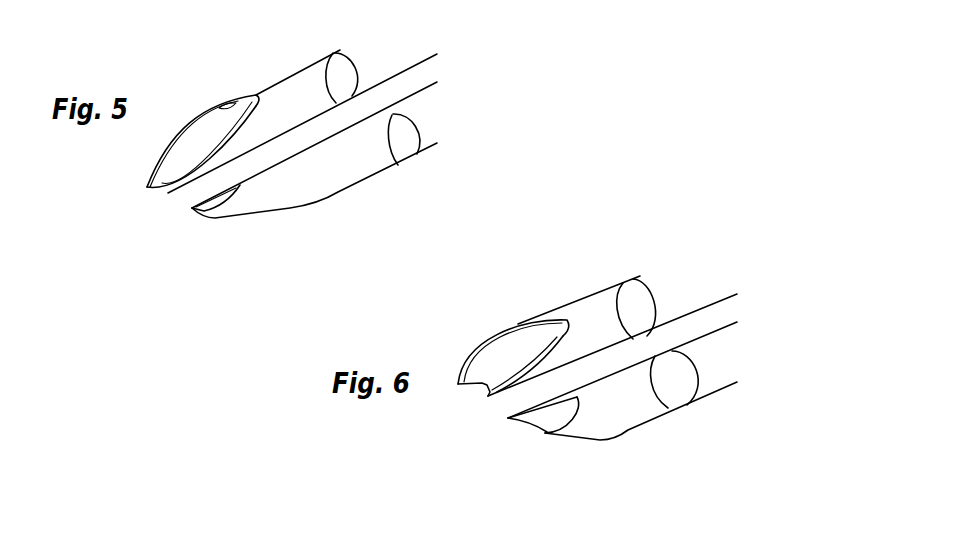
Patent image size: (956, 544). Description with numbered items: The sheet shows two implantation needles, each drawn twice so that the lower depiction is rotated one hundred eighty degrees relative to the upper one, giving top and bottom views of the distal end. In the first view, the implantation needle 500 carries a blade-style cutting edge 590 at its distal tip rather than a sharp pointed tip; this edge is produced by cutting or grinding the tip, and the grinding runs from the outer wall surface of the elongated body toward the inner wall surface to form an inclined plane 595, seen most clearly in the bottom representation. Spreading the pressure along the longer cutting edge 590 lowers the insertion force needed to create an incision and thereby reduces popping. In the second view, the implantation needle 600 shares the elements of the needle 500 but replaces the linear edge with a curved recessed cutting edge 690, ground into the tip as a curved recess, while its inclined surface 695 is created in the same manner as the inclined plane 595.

In FIG. 5, the implantation needle 500 is at (355, 175).
In FIG. 5, the blade-style cutting edge 590 is at (147, 187).
In FIG. 5, the inclined plane 595 is at (200, 205).
In FIG. 6, the implantation needle 600 is at (615, 371).
In FIG. 6, the curved recessed cutting edge 690 is at (482, 384).
In FIG. 6, the inclined surface 695 is at (548, 416).